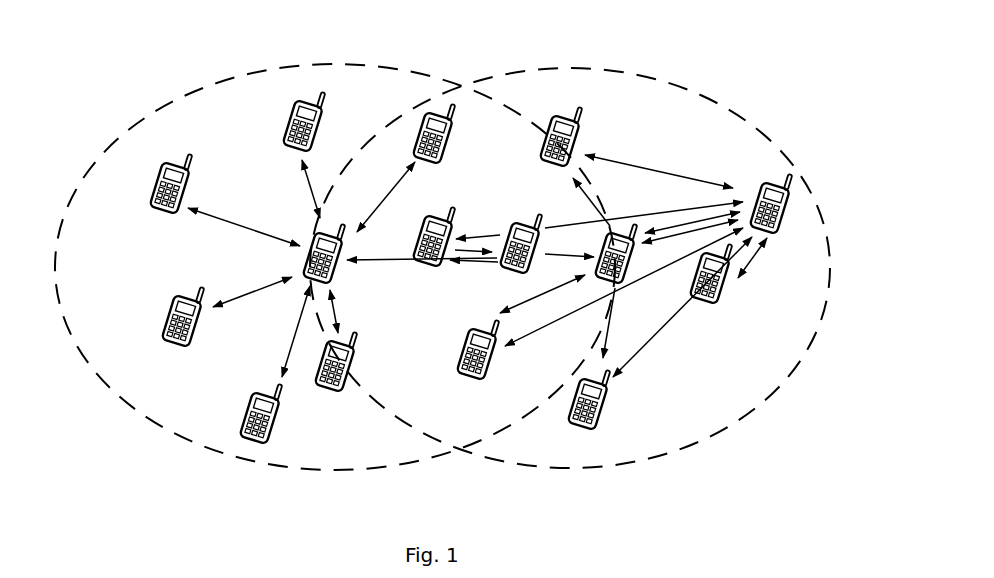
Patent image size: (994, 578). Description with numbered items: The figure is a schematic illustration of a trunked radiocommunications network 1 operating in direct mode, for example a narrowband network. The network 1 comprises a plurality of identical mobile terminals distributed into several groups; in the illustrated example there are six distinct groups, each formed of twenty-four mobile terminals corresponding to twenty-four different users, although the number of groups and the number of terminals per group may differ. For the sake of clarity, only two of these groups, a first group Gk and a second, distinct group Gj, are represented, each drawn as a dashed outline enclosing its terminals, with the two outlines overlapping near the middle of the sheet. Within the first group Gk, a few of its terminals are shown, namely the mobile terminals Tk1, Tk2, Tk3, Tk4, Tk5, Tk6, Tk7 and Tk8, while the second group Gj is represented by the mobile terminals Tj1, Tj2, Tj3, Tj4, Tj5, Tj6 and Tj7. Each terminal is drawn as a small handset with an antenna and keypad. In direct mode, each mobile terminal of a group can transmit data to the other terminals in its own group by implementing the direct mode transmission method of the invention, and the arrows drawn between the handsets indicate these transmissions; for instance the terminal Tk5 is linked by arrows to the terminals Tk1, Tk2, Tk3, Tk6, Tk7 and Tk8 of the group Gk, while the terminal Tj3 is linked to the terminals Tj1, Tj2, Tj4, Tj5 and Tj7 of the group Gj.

The trunked radiocommunications network 1 is at (816, 172).
The group Gk is at (185, 438).
The group Gj is at (757, 407).
The mobile terminal Tk1 is at (165, 340).
The mobile terminal Tk2 is at (251, 441).
The mobile terminal Tk3 is at (325, 390).
The mobile terminal Tk4 is at (503, 264).
The mobile terminal Tk5 is at (342, 274).
The mobile terminal Tk6 is at (448, 146).
The mobile terminal Tk7 is at (292, 112).
The mobile terminal Tk8 is at (157, 172).
The mobile terminal Tj1 is at (605, 411).
The mobile terminal Tj2 is at (727, 290).
The mobile terminal Tj3 is at (784, 208).
The mobile terminal Tj4 is at (633, 262).
The mobile terminal Tj5 is at (580, 134).
The mobile terminal Tj6 is at (450, 220).
The mobile terminal Tj7 is at (492, 368).